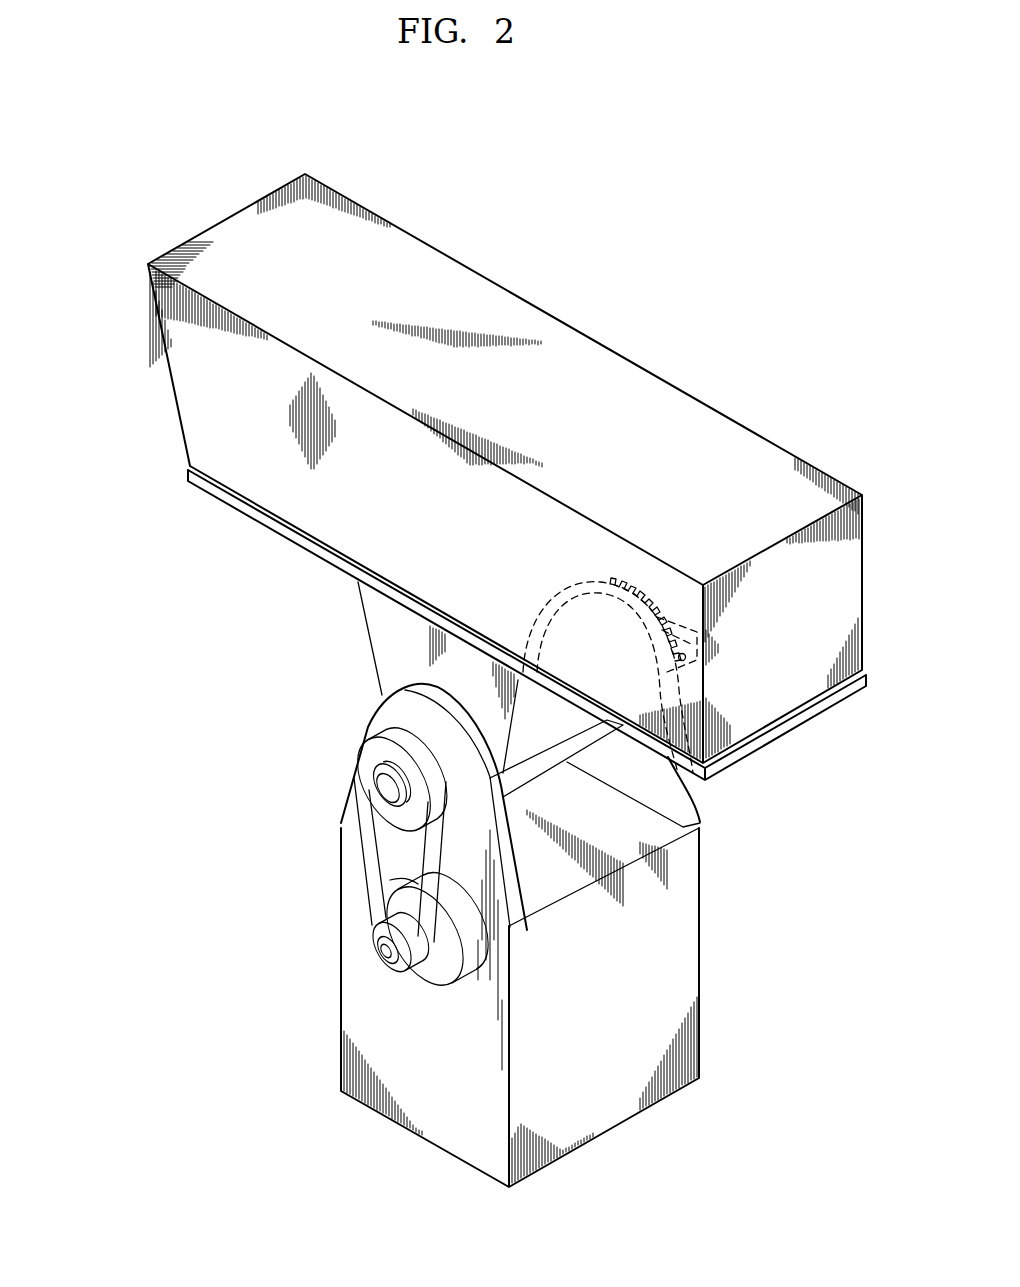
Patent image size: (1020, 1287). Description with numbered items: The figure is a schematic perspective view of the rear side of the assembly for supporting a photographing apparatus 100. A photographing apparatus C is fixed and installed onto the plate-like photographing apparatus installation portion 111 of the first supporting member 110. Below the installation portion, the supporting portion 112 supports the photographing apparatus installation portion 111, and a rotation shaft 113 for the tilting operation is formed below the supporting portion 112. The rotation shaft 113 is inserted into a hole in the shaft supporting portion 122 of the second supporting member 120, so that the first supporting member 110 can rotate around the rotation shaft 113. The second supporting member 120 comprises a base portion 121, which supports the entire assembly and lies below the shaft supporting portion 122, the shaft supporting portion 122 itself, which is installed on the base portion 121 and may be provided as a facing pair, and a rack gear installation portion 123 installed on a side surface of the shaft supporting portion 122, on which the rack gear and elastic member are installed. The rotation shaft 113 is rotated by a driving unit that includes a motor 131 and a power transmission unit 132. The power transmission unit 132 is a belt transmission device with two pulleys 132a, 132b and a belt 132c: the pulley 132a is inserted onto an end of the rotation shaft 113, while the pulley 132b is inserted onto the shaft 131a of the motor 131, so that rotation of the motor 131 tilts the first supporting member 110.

The assembly for supporting a photographing apparatus 100 is at (152, 558).
The photographing apparatus C is at (200, 403).
The first supporting member 110 is at (250, 591).
The photographing apparatus installation portion 111 is at (298, 538).
The supporting portion 112 is at (385, 647).
The rotation shaft 113 is at (384, 780).
The second supporting member 120 is at (805, 833).
The base portion 121 is at (655, 966).
The shaft supporting portion 122 is at (757, 923).
The rack gear installation portion 123 is at (693, 667).
The motor 131 is at (432, 976).
The shaft of the motor 131a is at (384, 952).
The power transmission unit 132 is at (226, 766).
The pulley 132a is at (368, 786).
The pulley 132b is at (375, 930).
The belt 132c is at (368, 850).